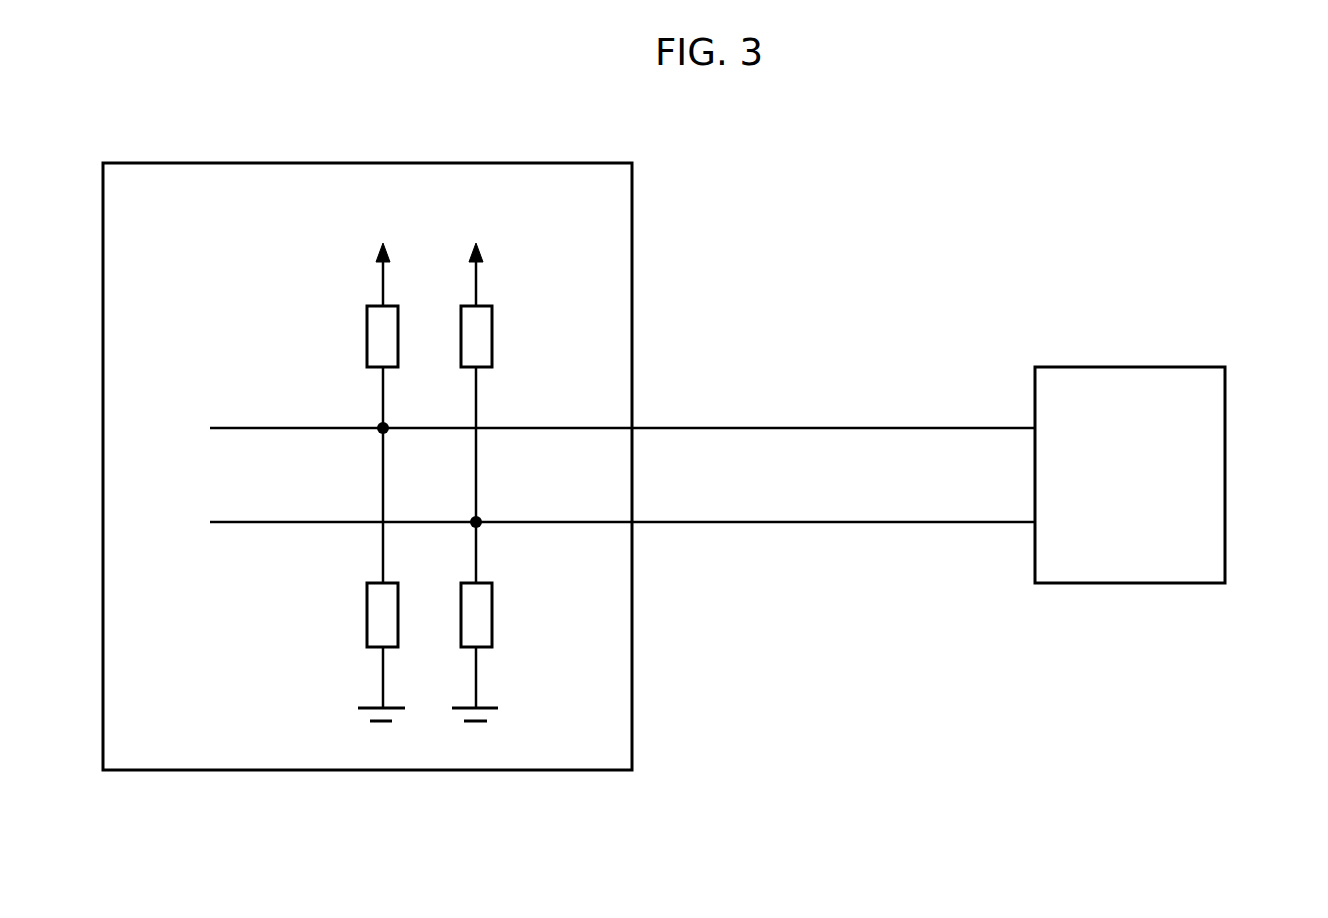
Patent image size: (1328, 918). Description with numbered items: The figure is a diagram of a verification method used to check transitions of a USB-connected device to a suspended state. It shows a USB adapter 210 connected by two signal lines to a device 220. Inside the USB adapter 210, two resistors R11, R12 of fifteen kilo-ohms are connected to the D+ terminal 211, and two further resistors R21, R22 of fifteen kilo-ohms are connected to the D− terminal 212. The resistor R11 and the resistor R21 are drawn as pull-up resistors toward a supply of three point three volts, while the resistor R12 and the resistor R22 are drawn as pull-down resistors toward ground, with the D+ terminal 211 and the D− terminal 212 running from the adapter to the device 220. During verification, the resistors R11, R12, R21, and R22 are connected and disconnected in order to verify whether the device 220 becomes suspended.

The USB adapter 210 is at (497, 163).
The D+ terminal 211 is at (237, 425).
The D− terminal 212 is at (237, 525).
The device 220 is at (1225, 472).
The resistor R11 is at (367, 333).
The resistor R12 is at (367, 613).
The resistor R21 is at (492, 333).
The resistor R22 is at (492, 613).